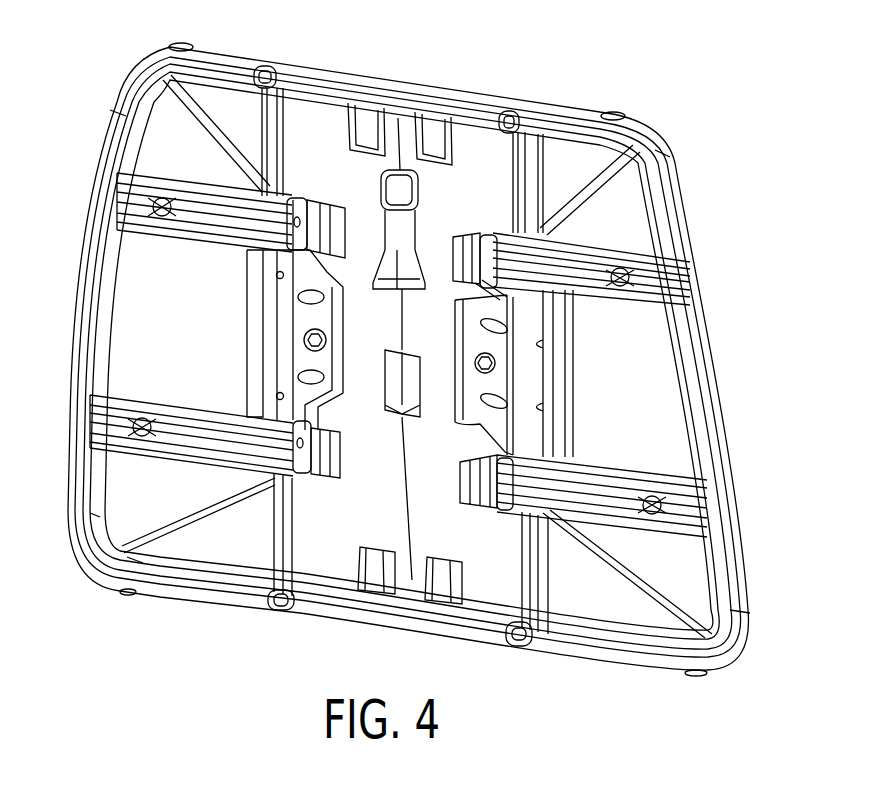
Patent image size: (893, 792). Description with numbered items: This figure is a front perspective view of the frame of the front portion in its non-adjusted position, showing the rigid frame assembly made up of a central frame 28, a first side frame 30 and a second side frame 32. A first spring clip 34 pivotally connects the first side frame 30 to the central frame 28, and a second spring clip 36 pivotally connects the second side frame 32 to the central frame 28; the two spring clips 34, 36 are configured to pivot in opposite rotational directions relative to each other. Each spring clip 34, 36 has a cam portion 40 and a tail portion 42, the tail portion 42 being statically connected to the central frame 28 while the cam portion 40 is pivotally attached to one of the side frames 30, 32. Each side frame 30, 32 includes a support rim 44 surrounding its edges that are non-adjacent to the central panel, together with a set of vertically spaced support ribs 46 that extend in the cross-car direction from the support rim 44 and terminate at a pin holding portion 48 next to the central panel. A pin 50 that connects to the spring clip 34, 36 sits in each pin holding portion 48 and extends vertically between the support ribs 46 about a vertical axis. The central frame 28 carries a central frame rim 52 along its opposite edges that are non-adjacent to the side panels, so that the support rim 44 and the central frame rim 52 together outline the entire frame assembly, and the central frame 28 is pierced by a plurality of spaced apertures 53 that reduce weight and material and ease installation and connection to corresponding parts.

The central frame 28 is at (403, 133).
The first side frame 30 is at (163, 133).
The second side frame 32 is at (633, 205).
The first spring clip 34 is at (293, 358).
The second spring clip 36 is at (553, 360).
The cam portion 40 is at (263, 378).
The tail portion 42 is at (240, 301).
The support rim 44 is at (112, 163).
The support ribs 46 is at (662, 287).
The pin holding portion 48 is at (527, 240).
The pin 50 is at (633, 150).
The central frame rim 52 is at (347, 75).
The apertures 53 is at (433, 153).